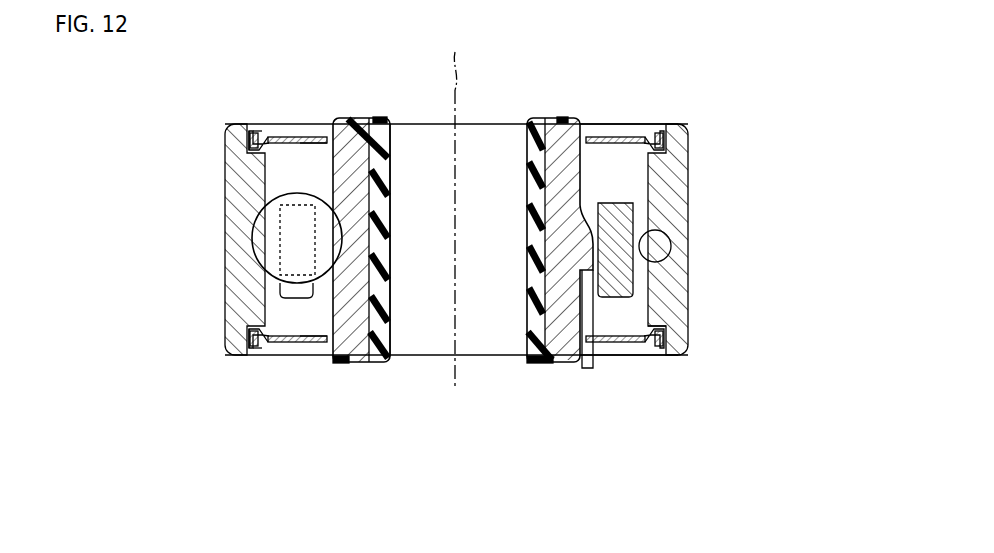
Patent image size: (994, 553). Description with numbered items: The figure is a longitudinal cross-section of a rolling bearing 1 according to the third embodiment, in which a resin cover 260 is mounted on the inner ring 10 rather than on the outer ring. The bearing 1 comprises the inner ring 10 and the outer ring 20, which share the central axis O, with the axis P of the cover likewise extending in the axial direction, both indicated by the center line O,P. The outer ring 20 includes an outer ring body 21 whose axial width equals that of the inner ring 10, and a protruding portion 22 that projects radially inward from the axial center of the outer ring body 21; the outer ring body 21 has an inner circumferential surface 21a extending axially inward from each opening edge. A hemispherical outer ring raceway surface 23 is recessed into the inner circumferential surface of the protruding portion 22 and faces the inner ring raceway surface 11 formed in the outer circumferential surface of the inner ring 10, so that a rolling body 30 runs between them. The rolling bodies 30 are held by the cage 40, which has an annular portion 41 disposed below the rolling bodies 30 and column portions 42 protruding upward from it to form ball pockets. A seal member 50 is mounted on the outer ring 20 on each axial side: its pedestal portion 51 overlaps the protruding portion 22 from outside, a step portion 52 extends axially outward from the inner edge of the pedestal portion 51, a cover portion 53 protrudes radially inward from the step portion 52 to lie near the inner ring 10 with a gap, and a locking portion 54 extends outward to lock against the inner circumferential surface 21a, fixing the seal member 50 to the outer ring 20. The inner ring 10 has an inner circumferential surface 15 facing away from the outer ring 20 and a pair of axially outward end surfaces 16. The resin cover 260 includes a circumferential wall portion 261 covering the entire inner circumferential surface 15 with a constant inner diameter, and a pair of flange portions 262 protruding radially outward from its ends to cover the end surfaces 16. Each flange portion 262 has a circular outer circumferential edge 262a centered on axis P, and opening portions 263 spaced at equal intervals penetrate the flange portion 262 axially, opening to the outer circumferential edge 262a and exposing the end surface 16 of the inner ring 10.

The bearing 1 is at (733, 70).
The inner ring 10 is at (531, 163).
The inner ring raceway surface 11 is at (577, 358).
The inner circumferential surface 15 is at (528, 287).
The end surface 16 is at (575, 366).
The outer ring 20 is at (689, 176).
The outer ring body 21 is at (660, 137).
The inner circumferential surface 21a is at (656, 136).
The protruding portion 22 is at (642, 343).
The outer ring raceway surface 23 is at (658, 248).
The rolling body 30 is at (258, 244).
The cage 40 is at (634, 222).
The annular portion 41 is at (297, 289).
The column portion 42 is at (296, 238).
The seal member 50 is at (299, 137).
The pedestal portion 51 is at (251, 128).
The step portion 52 is at (261, 131).
The cover portion 53 is at (318, 141).
The locking portion 54 is at (249, 140).
The resin cover 260 is at (366, 119).
The circumferential wall portion 261 is at (383, 243).
The flange portion 262 is at (340, 118).
The outer circumferential edge 262a is at (382, 155).
The opening portion 263 is at (560, 117).
The central axis O and axis P OP is at (452, 208).